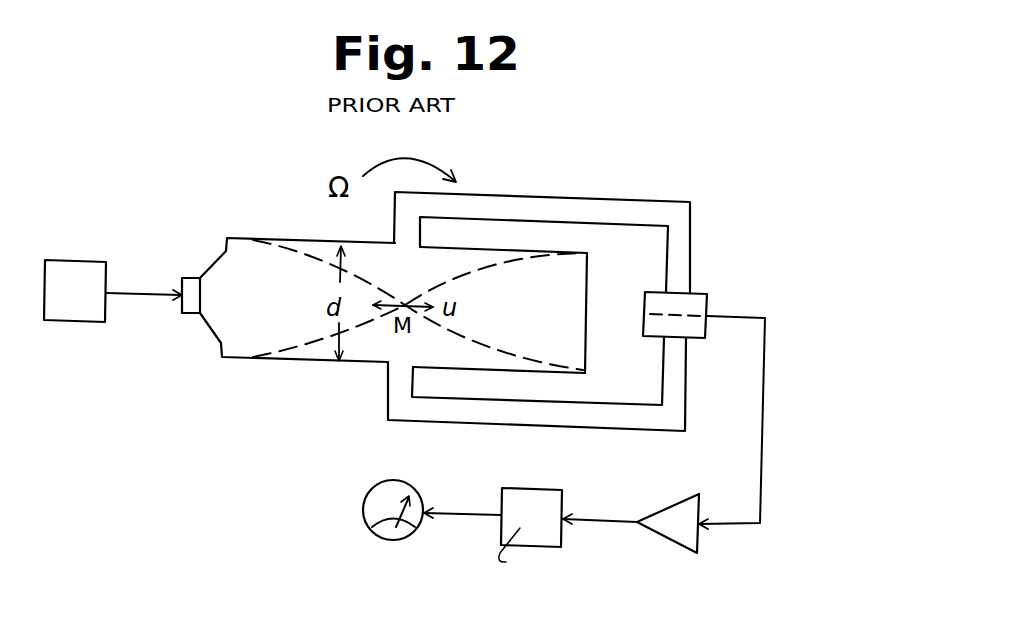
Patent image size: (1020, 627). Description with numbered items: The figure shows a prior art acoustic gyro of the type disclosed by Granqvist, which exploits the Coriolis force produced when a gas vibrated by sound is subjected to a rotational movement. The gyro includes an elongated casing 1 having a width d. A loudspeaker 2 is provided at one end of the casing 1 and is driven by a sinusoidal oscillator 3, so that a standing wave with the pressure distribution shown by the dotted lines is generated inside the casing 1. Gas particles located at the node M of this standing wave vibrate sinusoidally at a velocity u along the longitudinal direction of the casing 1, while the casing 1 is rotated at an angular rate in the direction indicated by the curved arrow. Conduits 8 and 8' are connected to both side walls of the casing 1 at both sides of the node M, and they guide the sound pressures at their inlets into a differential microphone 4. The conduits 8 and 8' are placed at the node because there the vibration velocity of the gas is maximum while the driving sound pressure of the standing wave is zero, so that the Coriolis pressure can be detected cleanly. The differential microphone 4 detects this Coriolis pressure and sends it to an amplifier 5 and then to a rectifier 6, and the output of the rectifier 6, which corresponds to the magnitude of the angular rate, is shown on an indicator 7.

The elongated casing 1 is at (274, 241).
The loudspeaker 2 is at (211, 267).
The sinusoidal oscillator 3 is at (65, 260).
The differential microphone 4 is at (697, 307).
The amplifier 5 is at (669, 507).
The rectifier 6 is at (515, 491).
The indicator 7 is at (410, 487).
The conduit 8 is at (542, 263).
The conduit 8' is at (537, 414).